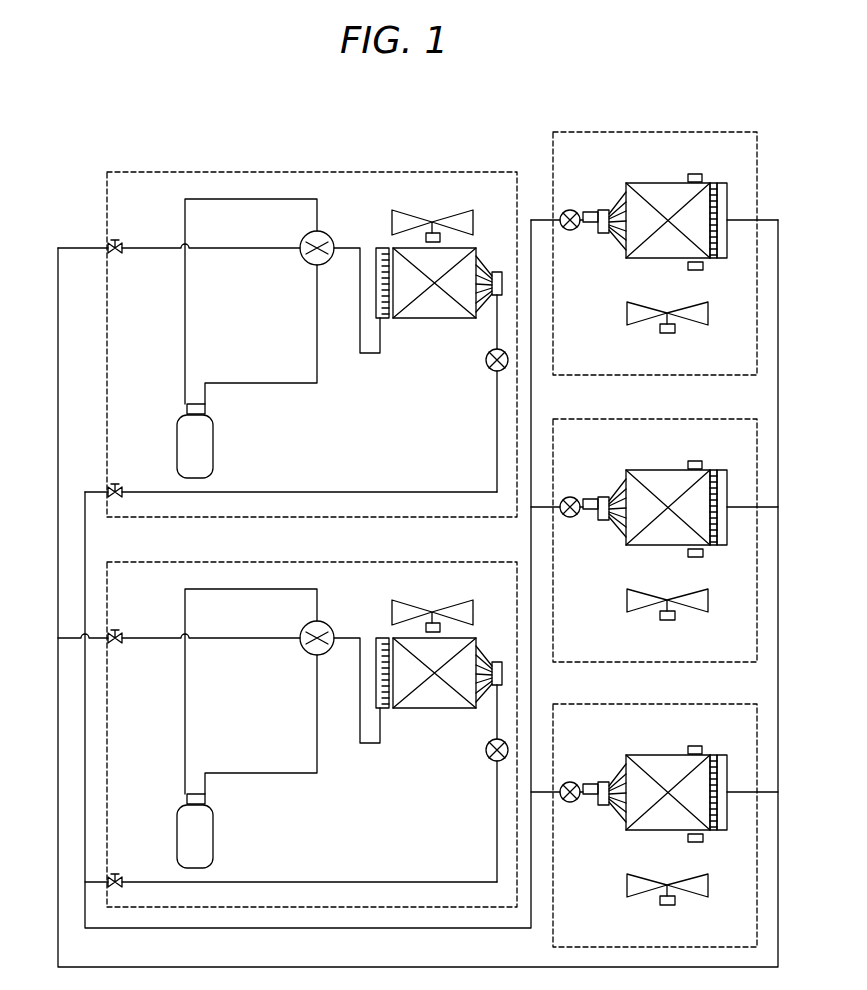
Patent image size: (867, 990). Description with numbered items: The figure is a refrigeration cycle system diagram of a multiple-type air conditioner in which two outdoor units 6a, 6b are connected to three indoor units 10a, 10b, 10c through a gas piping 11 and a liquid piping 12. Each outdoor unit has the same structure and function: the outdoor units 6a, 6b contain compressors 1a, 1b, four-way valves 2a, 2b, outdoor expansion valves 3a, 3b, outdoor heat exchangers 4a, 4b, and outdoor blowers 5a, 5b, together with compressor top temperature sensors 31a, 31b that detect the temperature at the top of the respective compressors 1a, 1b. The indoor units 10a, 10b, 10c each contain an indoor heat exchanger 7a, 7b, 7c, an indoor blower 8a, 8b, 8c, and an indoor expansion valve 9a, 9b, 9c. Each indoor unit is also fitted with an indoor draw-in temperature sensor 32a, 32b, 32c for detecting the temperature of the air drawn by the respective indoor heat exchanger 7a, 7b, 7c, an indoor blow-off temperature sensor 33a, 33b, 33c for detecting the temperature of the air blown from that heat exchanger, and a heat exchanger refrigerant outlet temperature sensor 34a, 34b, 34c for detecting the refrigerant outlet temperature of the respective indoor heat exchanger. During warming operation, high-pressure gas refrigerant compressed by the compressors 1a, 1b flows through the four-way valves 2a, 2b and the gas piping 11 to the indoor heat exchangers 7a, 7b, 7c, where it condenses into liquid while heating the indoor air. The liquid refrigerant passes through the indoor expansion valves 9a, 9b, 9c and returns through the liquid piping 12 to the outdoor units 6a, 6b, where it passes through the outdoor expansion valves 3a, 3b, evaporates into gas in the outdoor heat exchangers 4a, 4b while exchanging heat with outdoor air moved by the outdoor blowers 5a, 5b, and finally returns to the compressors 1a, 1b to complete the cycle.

The compressor 1a is at (177, 446).
The compressor 1b is at (177, 836).
The four-way valve 2a is at (330, 237).
The four-way valve 2b is at (330, 627).
The outdoor expansion valve 3a is at (486, 365).
The outdoor expansion valve 3b is at (486, 755).
The outdoor heat exchanger 4a is at (430, 320).
The outdoor heat exchanger 4b is at (430, 710).
The outdoor blower 5a is at (405, 218).
The outdoor blower 5b is at (405, 608).
The outdoor unit 6a is at (368, 172).
The outdoor unit 6b is at (368, 562).
The indoor heat exchanger 7a is at (645, 182).
The indoor heat exchanger 7b is at (645, 469).
The indoor heat exchanger 7c is at (645, 754).
The indoor blower 8a is at (636, 322).
The indoor blower 8b is at (636, 609).
The indoor blower 8c is at (636, 894).
The indoor expansion valve 9a is at (572, 231).
The indoor expansion valve 9b is at (572, 518).
The indoor expansion valve 9c is at (572, 803).
The indoor unit 10a is at (655, 131).
The indoor unit 10b is at (655, 418).
The indoor unit 10c is at (655, 703).
The gas piping 11 is at (82, 246).
The liquid piping 12 is at (96, 486).
The compressor top temperature sensor 31a is at (206, 409).
The compressor top temperature sensor 31b is at (206, 799).
The indoor draw-in temperature sensor 32a is at (700, 271).
The indoor draw-in temperature sensor 32b is at (700, 558).
The indoor draw-in temperature sensor 32c is at (700, 843).
The indoor blow-off temperature sensor 33a is at (697, 173).
The indoor blow-off temperature sensor 33b is at (697, 460).
The indoor blow-off temperature sensor 33c is at (697, 745).
The heat exchanger refrigerant outlet temperature sensor 34a is at (604, 209).
The heat exchanger refrigerant outlet temperature sensor 34b is at (604, 496).
The heat exchanger refrigerant outlet temperature sensor 34c is at (604, 781).